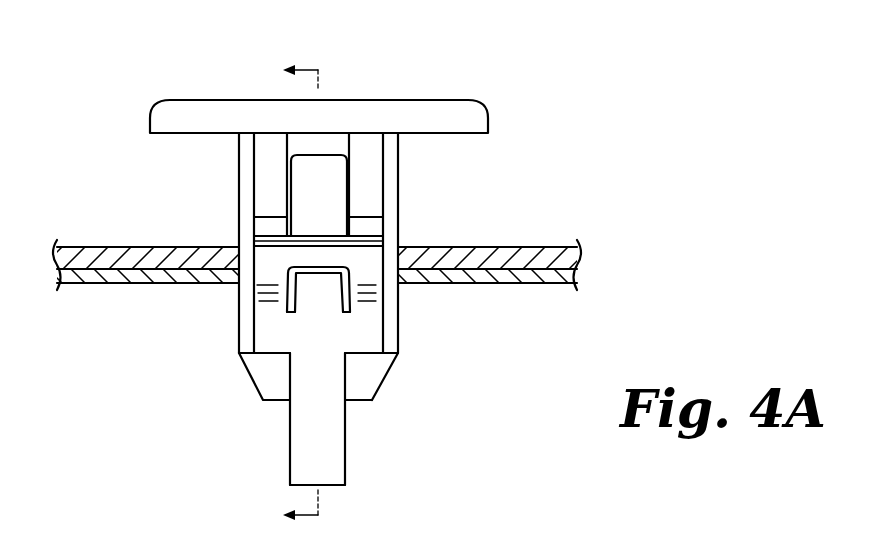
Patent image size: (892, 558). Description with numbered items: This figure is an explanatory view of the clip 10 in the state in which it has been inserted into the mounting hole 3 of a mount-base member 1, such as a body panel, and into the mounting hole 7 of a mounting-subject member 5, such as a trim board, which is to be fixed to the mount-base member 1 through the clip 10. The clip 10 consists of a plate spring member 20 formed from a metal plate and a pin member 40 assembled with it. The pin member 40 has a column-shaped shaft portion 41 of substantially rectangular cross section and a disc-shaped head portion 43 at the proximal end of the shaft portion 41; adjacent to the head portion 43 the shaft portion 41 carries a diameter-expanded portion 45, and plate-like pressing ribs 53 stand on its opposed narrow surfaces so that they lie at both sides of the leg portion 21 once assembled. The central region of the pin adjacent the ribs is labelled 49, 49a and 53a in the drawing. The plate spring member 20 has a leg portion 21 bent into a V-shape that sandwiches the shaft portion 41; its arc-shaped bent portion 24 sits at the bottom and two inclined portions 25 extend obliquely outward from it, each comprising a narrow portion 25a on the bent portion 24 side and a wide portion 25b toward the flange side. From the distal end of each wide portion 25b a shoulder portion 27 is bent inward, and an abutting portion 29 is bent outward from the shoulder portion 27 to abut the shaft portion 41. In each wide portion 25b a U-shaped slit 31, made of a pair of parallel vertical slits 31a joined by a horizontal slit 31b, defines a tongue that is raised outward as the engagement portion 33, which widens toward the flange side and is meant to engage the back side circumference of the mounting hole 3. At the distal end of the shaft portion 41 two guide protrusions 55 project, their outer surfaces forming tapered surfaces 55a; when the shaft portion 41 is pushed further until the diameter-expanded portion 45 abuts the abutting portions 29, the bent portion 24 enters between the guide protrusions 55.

The mount-base member 1 is at (545, 283).
The mounting hole 3 is at (403, 272).
The mounting-subject member 5 is at (546, 250).
The mounting hole 7 is at (412, 247).
The clip 10 is at (434, 86).
The plate spring member 20 is at (378, 469).
The leg portion 21 is at (366, 442).
The bent portion 24 is at (328, 487).
The inclined portion 25 is at (131, 345).
The narrow portion 25a is at (298, 447).
The wide portion 25b is at (272, 343).
The shoulder portion 27 is at (253, 297).
The abutting portion 29 is at (253, 285).
The slit 31 is at (494, 326).
The vertical slit 31a is at (301, 307).
The horizontal slit 31b is at (343, 261).
The engagement portion 33 is at (287, 270).
The pin member 40 is at (506, 113).
The shaft portion 41 is at (412, 198).
The head portion 43 is at (198, 115).
The diameter-expanded portion 45 is at (371, 151).
The center boss 49 is at (335, 160).
The boss side wall 49a is at (297, 150).
The pressing rib 53 is at (392, 172).
The rib shoulder 53a is at (273, 218).
The guide protrusion 55 is at (362, 399).
The tapered surface 55a is at (373, 390).